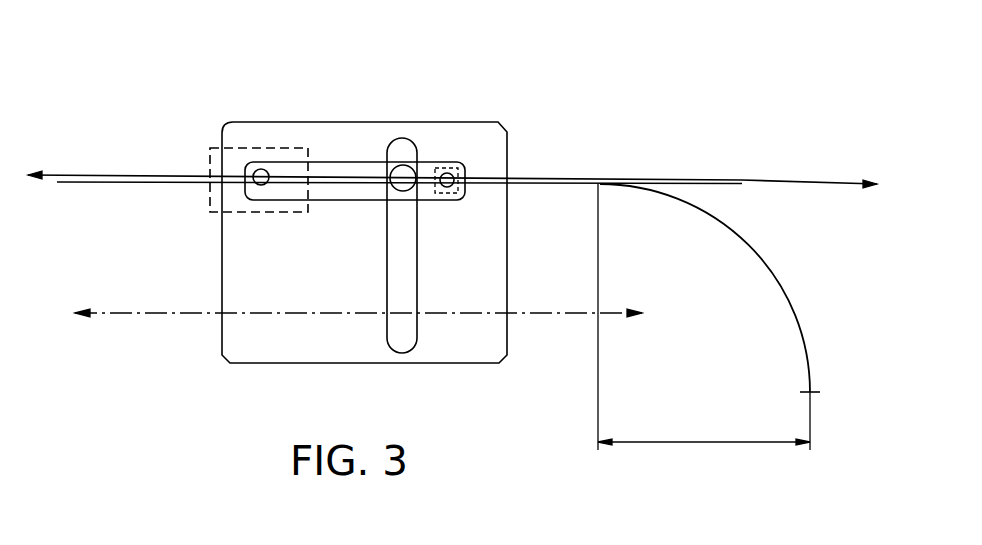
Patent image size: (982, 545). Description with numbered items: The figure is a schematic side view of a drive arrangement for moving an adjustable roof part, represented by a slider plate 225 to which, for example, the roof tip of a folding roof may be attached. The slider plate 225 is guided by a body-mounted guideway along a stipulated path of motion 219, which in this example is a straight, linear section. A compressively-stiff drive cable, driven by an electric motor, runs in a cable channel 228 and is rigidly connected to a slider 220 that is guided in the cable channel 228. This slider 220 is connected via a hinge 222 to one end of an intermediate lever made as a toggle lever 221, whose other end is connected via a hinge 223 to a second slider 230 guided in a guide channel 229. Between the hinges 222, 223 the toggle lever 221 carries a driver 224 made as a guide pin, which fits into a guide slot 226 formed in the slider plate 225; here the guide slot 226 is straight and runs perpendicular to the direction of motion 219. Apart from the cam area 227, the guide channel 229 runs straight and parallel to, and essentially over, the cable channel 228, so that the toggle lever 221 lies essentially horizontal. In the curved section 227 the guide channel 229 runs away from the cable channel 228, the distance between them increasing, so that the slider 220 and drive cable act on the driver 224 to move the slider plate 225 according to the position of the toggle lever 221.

The path of motion 219 is at (150, 313).
The slider 220 is at (212, 157).
The toggle lever 221 is at (352, 170).
The hinge 222 is at (264, 170).
The hinge 223 is at (448, 175).
The driver 224 is at (404, 175).
The slider plate 225 is at (305, 335).
The guide slot 226 is at (398, 332).
The cam area 227 is at (717, 442).
The cable channel 228 is at (742, 180).
The guide channel 229 is at (777, 272).
The slider 230 is at (465, 161).